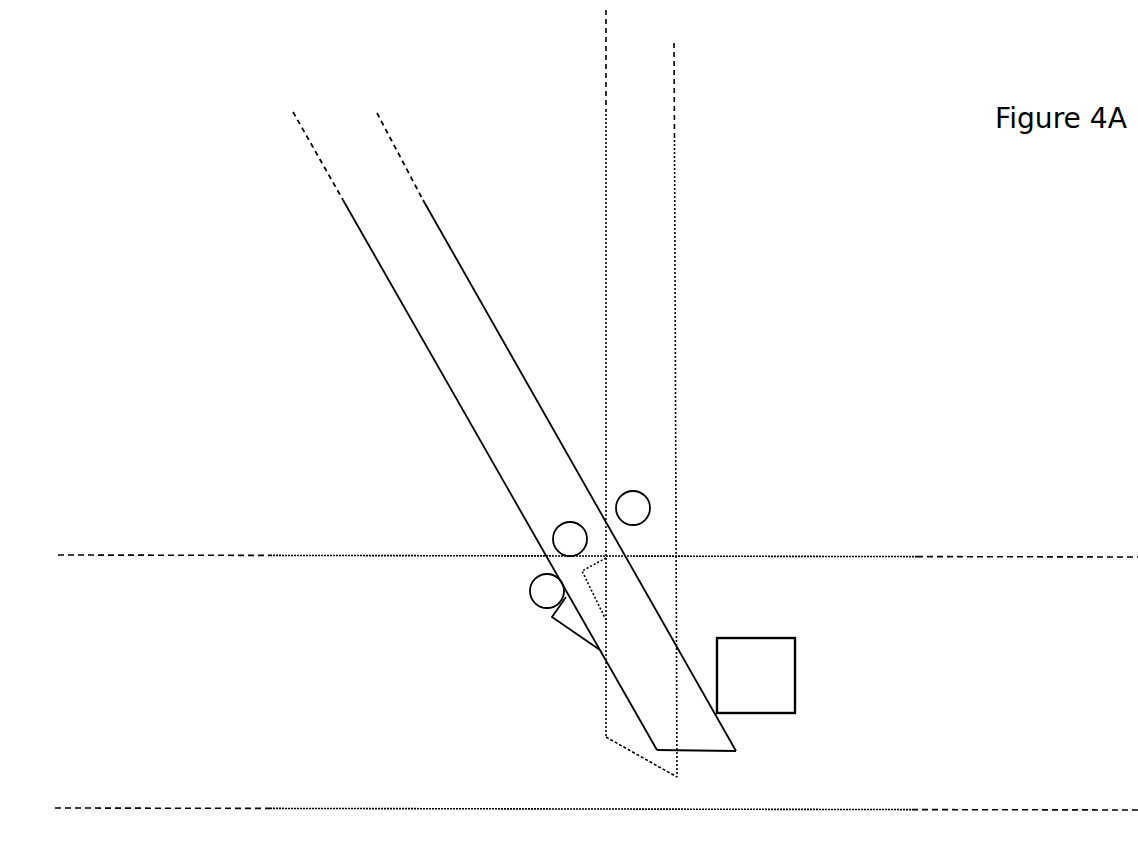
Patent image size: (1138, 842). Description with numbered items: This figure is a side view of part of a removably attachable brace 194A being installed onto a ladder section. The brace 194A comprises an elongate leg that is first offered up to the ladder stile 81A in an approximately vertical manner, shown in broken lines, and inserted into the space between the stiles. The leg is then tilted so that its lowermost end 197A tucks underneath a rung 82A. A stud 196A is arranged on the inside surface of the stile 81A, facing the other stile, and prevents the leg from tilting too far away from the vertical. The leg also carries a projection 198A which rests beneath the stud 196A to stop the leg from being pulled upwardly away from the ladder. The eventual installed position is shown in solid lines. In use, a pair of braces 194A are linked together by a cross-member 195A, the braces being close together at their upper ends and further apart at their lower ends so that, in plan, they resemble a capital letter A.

The brace 194A is at (413, 268).
The cross-member 195A is at (571, 540).
The stud 196A is at (547, 592).
The lowermost end 197A is at (735, 735).
The projection 198A is at (570, 633).
The ladder stile 81A is at (897, 570).
The rung 82A is at (778, 690).